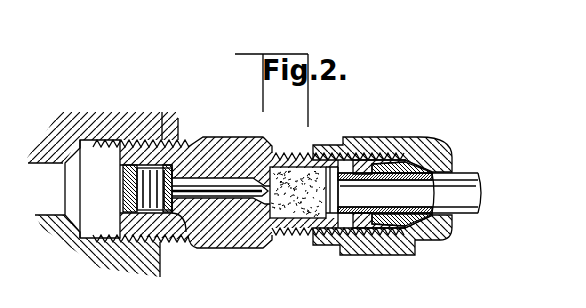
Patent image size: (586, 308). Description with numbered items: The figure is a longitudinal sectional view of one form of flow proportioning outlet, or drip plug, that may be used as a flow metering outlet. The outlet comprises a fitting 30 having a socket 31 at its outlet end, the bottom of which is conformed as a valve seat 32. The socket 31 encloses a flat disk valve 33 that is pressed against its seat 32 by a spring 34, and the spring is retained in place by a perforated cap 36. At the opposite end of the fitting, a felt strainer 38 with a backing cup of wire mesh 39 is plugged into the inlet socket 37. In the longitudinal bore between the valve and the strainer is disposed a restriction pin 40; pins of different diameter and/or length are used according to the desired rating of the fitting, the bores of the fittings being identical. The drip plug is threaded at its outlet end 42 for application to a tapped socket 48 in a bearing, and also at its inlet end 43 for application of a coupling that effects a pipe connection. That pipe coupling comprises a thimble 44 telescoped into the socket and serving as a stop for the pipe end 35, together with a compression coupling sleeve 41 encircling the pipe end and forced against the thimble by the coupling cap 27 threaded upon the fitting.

The coupling cap 27 is at (415, 246).
The fitting 30 is at (243, 123).
The socket 31 is at (171, 146).
The valve seat 32 is at (186, 222).
The flat disk valve 33 is at (167, 217).
The spring 34 is at (148, 188).
The pipe end 35 is at (466, 176).
The perforated cap 36 is at (127, 170).
The inlet socket 37 is at (297, 163).
The felt strainer 38 is at (308, 205).
The backing cup of wire mesh 39 is at (270, 218).
The restriction pin 40 is at (233, 198).
The compression coupling sleeve 41 is at (412, 159).
The outlet end thread 42 is at (147, 138).
The inlet end thread 43 is at (340, 245).
The thimble 44 is at (370, 166).
The tapped socket 48 is at (104, 139).